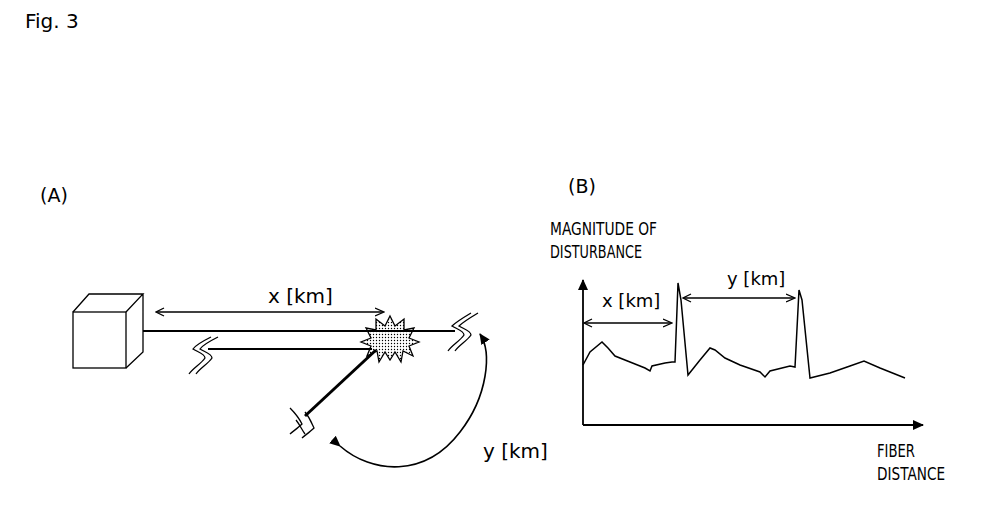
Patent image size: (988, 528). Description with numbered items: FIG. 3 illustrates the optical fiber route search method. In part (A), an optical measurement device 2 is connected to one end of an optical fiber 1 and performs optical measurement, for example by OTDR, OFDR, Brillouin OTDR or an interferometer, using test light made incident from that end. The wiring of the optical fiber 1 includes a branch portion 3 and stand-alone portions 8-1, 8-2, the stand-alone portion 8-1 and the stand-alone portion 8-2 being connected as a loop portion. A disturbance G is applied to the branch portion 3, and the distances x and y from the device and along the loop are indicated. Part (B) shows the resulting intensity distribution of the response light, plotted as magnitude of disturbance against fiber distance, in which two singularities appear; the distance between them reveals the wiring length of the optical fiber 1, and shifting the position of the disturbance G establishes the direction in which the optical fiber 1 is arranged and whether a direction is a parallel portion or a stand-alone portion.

The optical fiber 1 is at (288, 351).
The optical measurement device 2 is at (73, 368).
The branch portion 3 is at (412, 362).
The stand-alone portion 8-1 is at (386, 364).
The stand-alone portion 8-2 is at (454, 316).
The disturbance G is at (399, 318).